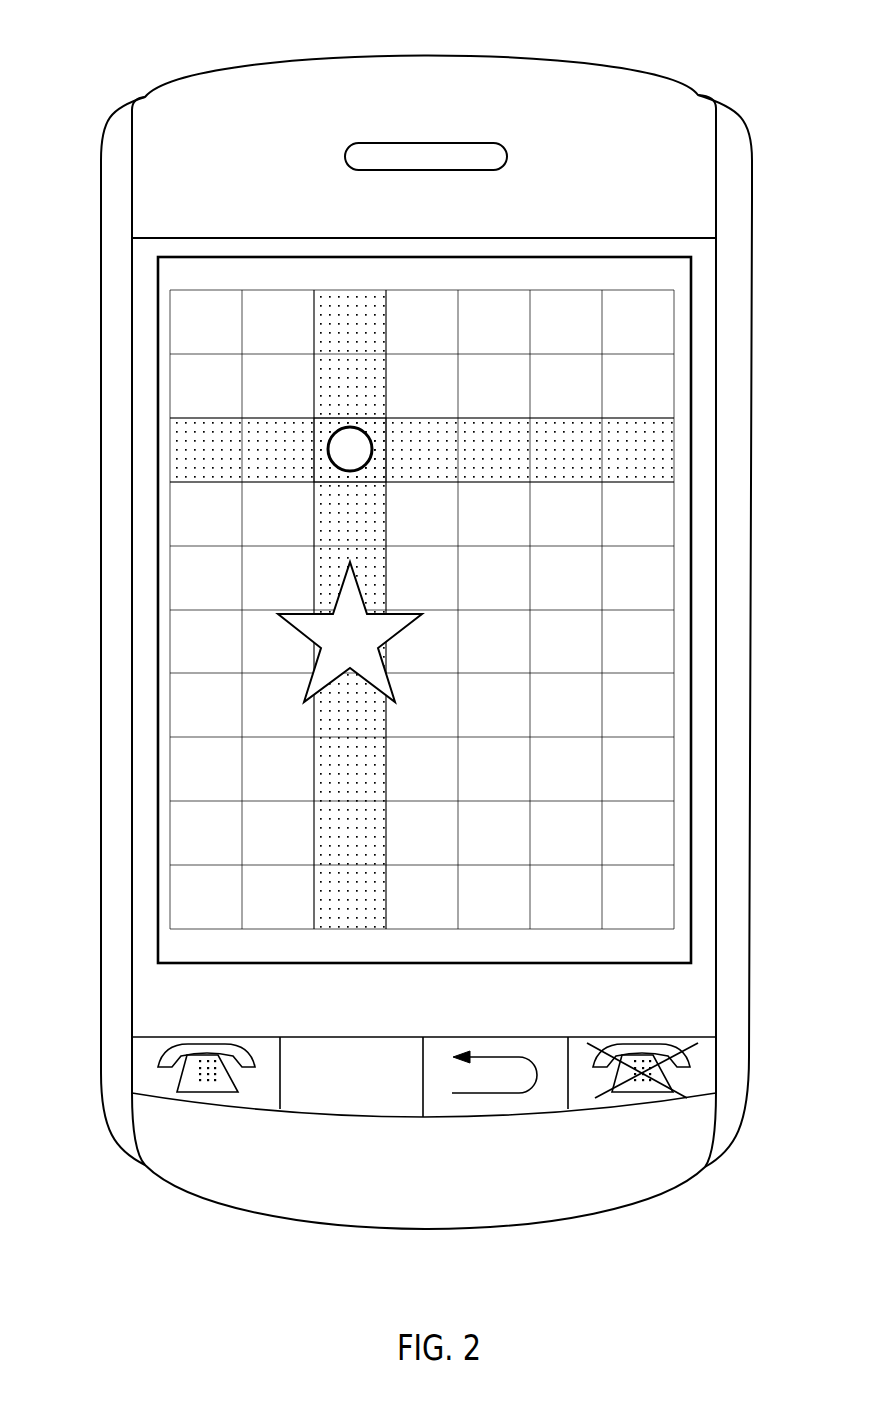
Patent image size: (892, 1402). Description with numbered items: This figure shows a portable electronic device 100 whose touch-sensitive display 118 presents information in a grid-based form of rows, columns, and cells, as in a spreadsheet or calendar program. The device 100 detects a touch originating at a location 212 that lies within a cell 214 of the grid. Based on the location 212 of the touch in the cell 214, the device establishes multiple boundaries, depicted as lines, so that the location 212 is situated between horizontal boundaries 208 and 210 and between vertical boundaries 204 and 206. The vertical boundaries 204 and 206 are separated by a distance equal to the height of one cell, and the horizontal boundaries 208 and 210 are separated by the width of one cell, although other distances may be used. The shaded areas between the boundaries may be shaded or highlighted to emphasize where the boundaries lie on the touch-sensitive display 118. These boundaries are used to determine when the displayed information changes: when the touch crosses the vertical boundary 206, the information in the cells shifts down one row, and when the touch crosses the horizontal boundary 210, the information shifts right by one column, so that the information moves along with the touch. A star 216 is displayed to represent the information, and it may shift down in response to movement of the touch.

The portable electronic device 100 is at (698, 92).
The touch-sensitive display 118 is at (660, 268).
The vertical boundary 204 is at (518, 418).
The vertical boundary 206 is at (515, 482).
The horizontal boundary 208 is at (314, 327).
The horizontal boundary 210 is at (387, 327).
The location 212 is at (357, 455).
The cell 214 is at (323, 472).
The star 216 is at (309, 644).